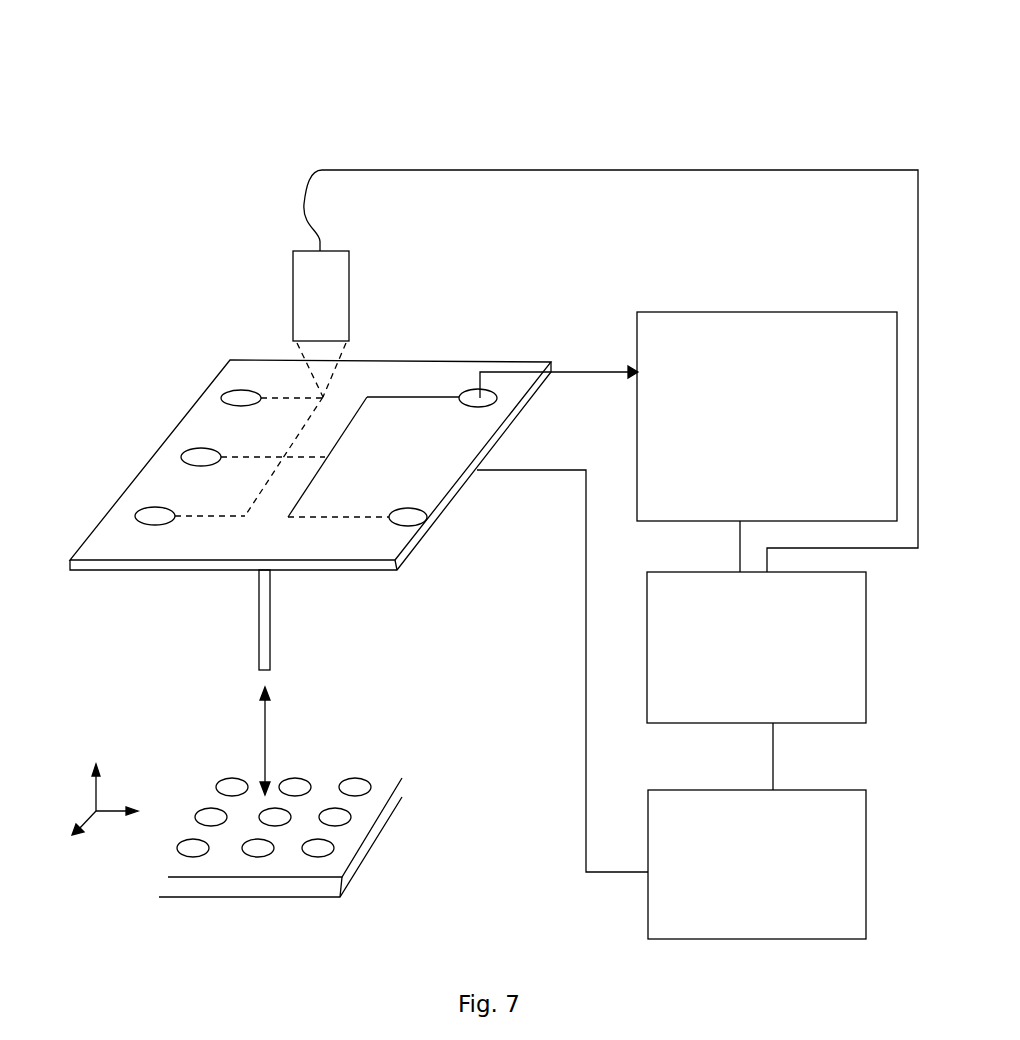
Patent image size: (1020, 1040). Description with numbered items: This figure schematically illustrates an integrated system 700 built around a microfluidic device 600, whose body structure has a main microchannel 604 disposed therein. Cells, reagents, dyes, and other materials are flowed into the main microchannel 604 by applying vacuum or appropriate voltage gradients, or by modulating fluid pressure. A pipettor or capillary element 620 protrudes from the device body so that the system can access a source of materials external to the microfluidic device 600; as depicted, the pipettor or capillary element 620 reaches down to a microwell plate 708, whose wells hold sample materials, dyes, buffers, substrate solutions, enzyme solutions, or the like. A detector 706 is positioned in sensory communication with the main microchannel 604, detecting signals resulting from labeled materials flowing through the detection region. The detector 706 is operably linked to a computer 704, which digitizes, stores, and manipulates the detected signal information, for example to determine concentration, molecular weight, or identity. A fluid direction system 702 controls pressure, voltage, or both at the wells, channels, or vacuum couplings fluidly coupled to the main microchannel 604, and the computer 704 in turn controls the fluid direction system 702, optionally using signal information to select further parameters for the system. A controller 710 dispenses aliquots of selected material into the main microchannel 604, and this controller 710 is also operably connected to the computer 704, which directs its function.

The system 700 is at (193, 118).
The microfluidic device 600 is at (138, 471).
The main microchannel 604 is at (296, 431).
The pipettor or capillary element 620 is at (258, 636).
The fluid direction system 702 is at (767, 416).
The computer 704 is at (756, 647).
The detector 706 is at (321, 296).
The microwell plate 708 is at (362, 860).
The controller 710 is at (757, 864).